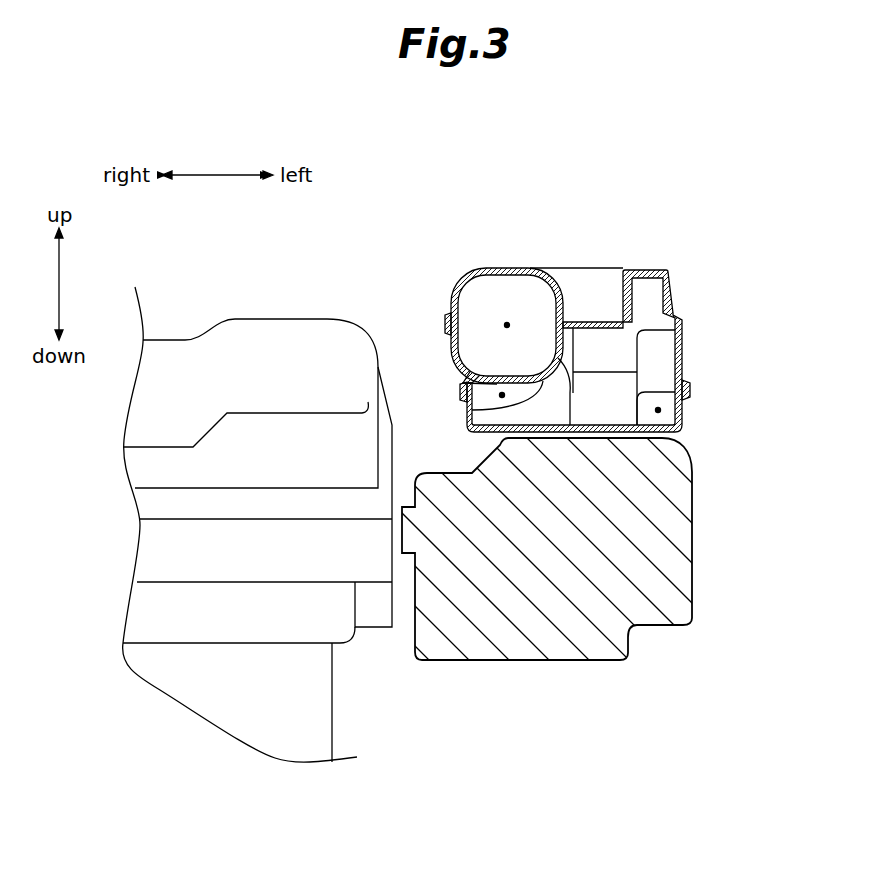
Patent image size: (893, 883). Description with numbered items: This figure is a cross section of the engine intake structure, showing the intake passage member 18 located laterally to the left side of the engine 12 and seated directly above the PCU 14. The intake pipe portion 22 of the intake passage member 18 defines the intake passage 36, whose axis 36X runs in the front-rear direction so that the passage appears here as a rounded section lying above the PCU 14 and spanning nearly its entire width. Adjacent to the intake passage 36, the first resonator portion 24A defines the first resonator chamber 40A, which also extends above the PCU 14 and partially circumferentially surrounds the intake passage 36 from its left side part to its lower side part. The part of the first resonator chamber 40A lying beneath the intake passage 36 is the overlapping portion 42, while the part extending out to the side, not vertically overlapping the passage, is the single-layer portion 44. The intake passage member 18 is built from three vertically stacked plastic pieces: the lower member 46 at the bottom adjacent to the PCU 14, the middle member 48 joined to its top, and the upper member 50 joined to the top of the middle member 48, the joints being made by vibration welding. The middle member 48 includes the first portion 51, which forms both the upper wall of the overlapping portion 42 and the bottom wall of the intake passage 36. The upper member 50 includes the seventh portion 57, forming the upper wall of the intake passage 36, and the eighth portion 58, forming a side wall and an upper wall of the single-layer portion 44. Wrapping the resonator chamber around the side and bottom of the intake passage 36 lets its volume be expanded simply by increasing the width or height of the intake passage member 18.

The engine 12 is at (322, 710).
The PCU 14 is at (680, 538).
The intake passage member 18 is at (583, 264).
The intake pipe portion 22 is at (487, 270).
The first resonator portion 24A is at (650, 270).
The intake passage 36 is at (523, 362).
The axis 36X is at (507, 323).
The first resonator chamber 40A is at (631, 413).
The overlapping portion 42 is at (500, 396).
The single-layer portion 44 is at (661, 410).
The lower member 46 is at (684, 427).
The middle member 48 is at (682, 348).
The upper member 50 is at (675, 305).
The first portion 51 is at (462, 383).
The seventh portion 57 is at (468, 281).
The eighth portion 58 is at (672, 290).